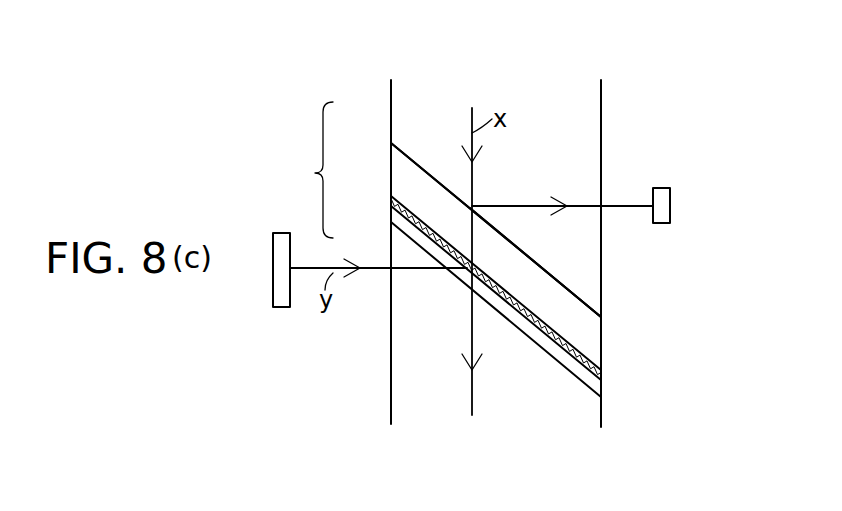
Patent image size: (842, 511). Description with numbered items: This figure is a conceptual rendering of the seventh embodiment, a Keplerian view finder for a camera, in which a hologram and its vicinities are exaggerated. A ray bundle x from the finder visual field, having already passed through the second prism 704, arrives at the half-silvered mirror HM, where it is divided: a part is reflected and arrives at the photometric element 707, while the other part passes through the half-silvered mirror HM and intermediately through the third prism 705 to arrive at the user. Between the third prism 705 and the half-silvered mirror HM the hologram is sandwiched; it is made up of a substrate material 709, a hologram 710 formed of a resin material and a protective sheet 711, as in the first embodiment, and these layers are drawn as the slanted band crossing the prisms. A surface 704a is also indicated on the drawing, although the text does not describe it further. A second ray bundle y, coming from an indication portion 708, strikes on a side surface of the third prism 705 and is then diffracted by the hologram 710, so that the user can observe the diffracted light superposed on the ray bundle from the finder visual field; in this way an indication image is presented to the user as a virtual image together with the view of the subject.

The second prism 704 is at (613, 145).
The surface of optical element 704a is at (417, 162).
The third prism 705 is at (385, 357).
The photometric element 707 is at (670, 200).
The indication portion 708 is at (273, 258).
The substrate material 709 is at (400, 168).
The hologram 710 is at (390, 200).
The protective sheet 711 is at (398, 222).
The half-silvered mirror HM is at (525, 250).